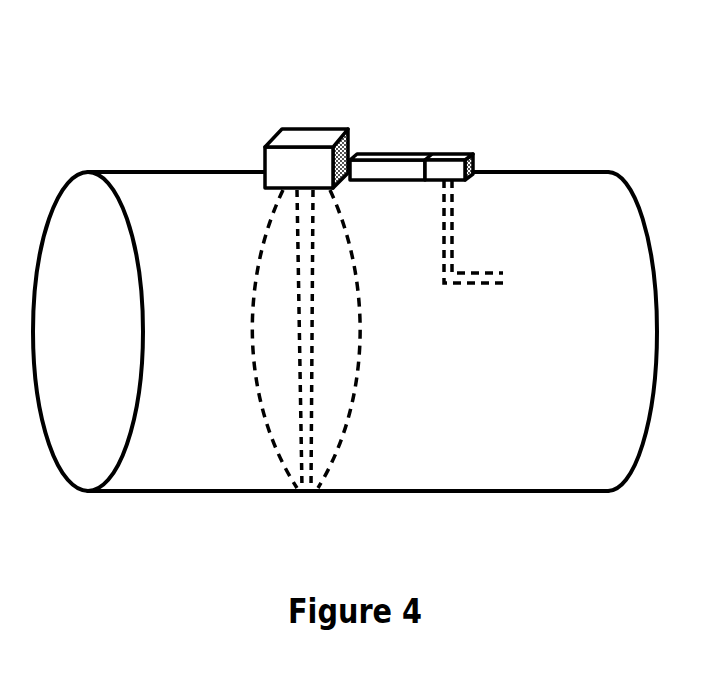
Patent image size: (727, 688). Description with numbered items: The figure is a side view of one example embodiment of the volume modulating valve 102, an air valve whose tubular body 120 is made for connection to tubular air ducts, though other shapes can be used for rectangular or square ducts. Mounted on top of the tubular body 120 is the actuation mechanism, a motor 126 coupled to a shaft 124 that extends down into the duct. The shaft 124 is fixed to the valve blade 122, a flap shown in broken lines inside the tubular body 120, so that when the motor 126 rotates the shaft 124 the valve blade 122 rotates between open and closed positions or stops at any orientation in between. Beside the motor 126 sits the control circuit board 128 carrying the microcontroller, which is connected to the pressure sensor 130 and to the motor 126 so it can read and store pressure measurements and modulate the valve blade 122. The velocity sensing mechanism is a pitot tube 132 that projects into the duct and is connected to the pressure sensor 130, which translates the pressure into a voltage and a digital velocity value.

The volume modulating valve 102 is at (136, 101).
The tubular body 120 is at (152, 473).
The valve blade 122 is at (345, 445).
The shaft 124 is at (290, 485).
The motor 126 is at (285, 162).
The control circuit board 128 is at (392, 155).
The pressure sensor 130 is at (473, 154).
The pitot tube 132 is at (500, 272).